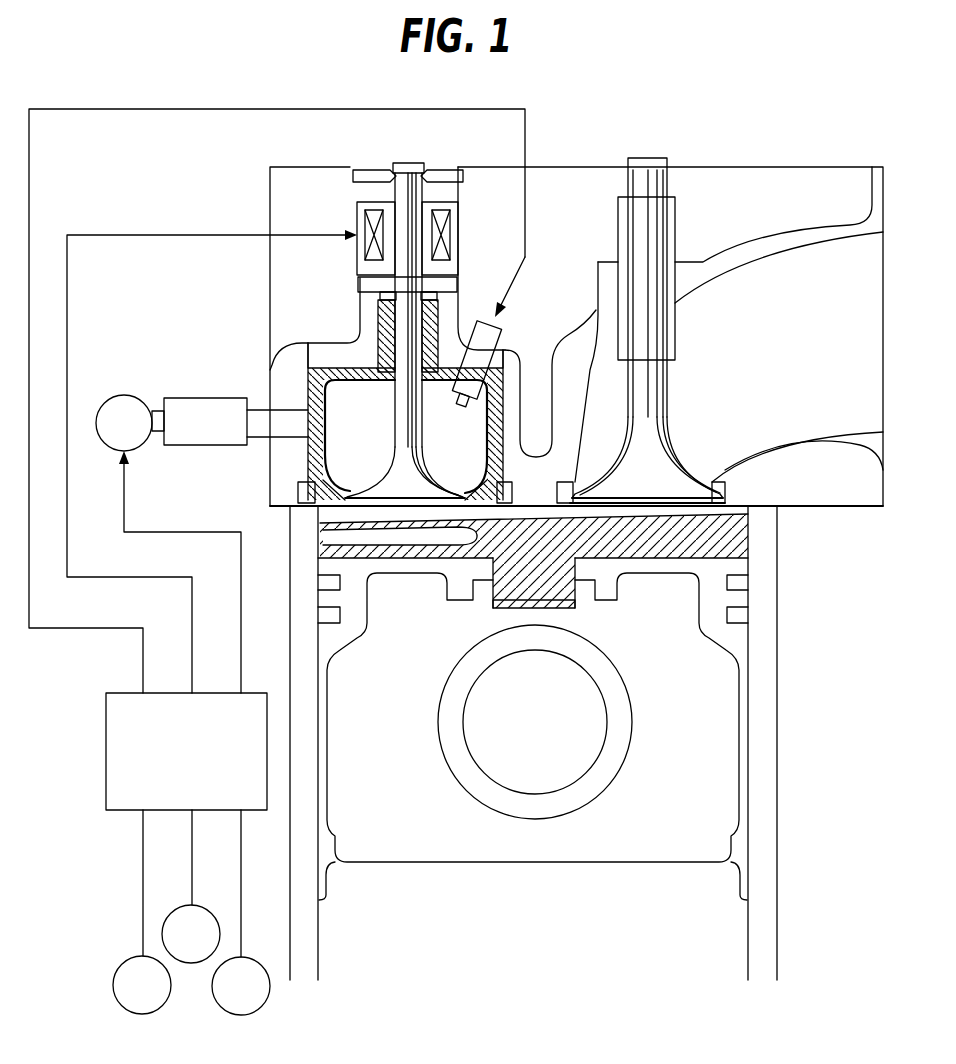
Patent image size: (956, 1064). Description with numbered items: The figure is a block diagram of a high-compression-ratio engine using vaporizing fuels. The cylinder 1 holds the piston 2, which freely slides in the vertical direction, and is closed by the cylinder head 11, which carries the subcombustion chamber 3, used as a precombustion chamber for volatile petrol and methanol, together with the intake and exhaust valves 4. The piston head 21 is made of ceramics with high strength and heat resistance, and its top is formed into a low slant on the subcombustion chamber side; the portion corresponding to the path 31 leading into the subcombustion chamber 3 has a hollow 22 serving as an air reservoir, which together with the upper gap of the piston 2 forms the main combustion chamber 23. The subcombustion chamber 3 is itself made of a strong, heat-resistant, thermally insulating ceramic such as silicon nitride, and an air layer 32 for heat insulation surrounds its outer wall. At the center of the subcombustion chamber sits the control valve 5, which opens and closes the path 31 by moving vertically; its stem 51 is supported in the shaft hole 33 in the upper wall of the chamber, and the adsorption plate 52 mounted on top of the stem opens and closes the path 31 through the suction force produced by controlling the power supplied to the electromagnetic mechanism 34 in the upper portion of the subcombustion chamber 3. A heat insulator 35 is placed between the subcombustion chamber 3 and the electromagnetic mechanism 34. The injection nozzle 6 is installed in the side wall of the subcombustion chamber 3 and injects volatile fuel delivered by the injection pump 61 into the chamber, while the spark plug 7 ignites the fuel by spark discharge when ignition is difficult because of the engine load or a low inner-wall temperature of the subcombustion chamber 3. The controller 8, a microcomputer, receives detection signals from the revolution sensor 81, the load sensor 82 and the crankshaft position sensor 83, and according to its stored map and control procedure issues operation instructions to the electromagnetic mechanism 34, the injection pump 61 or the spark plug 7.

The cylinder 1 is at (789, 708).
The piston 2 is at (753, 656).
The subcombustion chamber 3 is at (308, 350).
The intake and exhaust valves 4 is at (667, 410).
The control valve 5 is at (420, 470).
The injection nozzle 6 is at (203, 398).
The spark plug 7 is at (500, 338).
The controller 8 is at (110, 767).
The cylinder head 11 is at (535, 436).
The piston head 21 is at (723, 543).
The hollow 22 is at (418, 537).
The main combustion chamber 23 is at (748, 512).
The path 31 is at (345, 507).
The air layer 32 is at (307, 462).
The shaft hole 33 is at (377, 325).
The electromagnetic mechanism 34 is at (455, 233).
The heat insulator 35 is at (382, 297).
The stem 51 is at (398, 395).
The adsorption plate 52 is at (447, 165).
The injection pump 61 is at (127, 403).
The revolution sensor 81 is at (118, 978).
The load sensor 82 is at (172, 921).
The crankshaft position sensor 83 is at (243, 977).